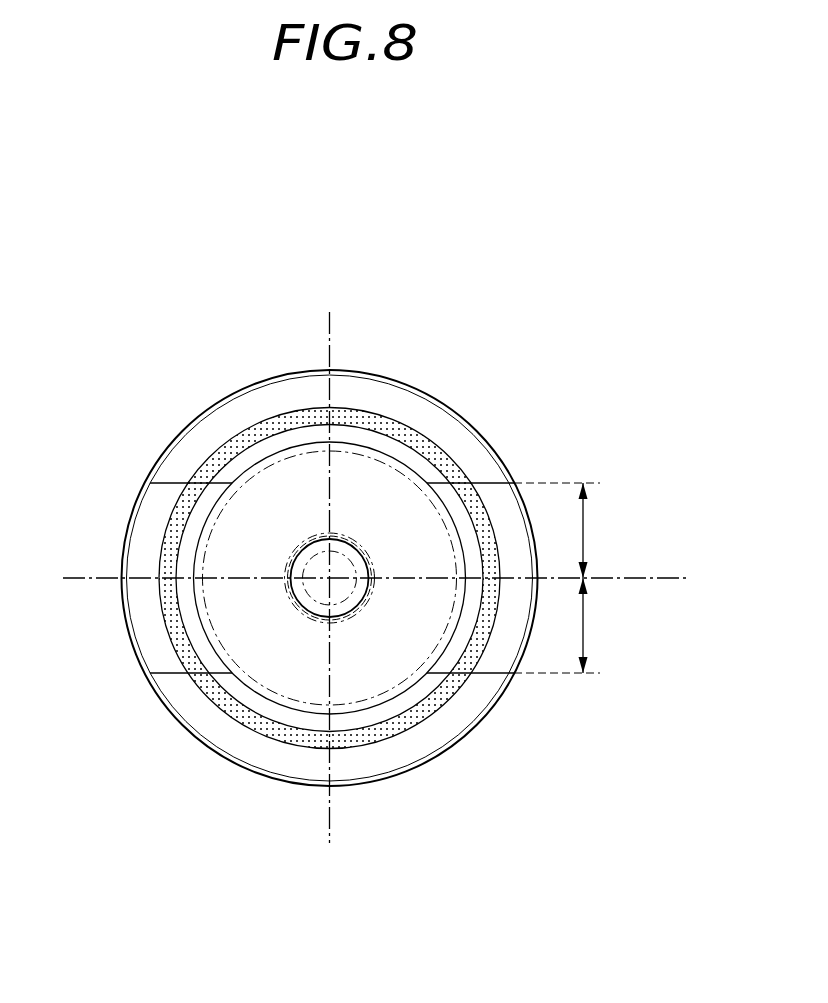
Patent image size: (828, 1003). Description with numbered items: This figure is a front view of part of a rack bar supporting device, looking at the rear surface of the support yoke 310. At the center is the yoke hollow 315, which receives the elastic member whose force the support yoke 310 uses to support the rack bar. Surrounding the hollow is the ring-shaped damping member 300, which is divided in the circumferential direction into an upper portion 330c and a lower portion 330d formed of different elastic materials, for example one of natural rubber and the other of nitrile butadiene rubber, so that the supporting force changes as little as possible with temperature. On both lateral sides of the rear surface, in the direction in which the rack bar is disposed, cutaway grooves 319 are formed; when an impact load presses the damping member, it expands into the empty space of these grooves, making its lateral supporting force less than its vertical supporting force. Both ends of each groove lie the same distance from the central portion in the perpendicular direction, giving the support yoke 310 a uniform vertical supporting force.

The support yoke 310 is at (134, 227).
The damping member 300 is at (330, 577).
The cutaway grooves 319 is at (145, 533).
The circumferentially divided portion of damping member 330c is at (383, 417).
The circumferentially divided portion of damping member 330d is at (388, 733).
The yoke hollow 315 is at (253, 643).